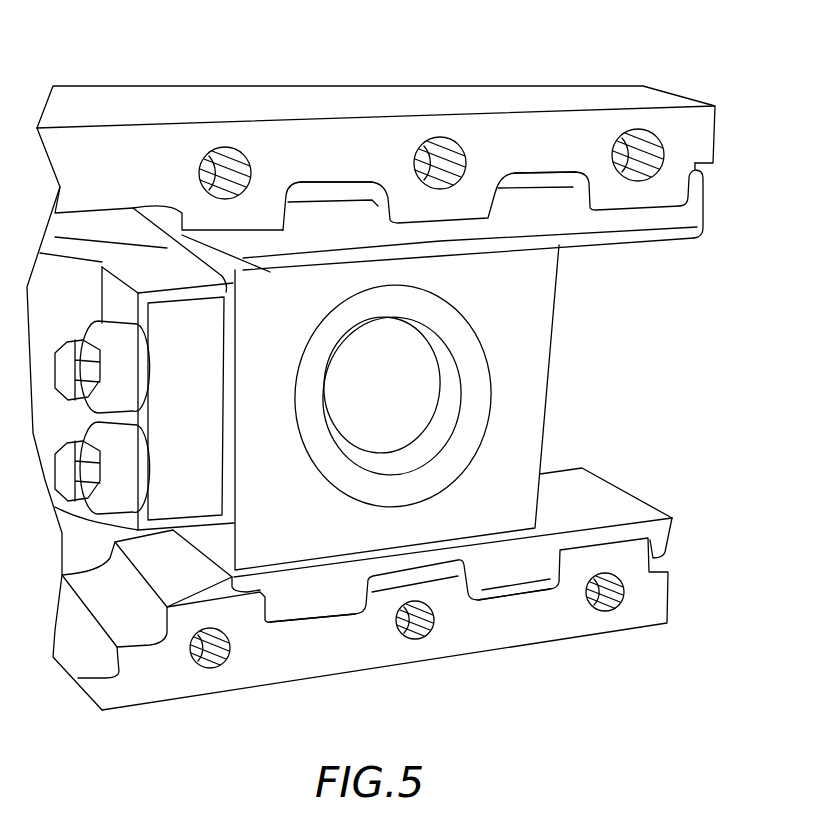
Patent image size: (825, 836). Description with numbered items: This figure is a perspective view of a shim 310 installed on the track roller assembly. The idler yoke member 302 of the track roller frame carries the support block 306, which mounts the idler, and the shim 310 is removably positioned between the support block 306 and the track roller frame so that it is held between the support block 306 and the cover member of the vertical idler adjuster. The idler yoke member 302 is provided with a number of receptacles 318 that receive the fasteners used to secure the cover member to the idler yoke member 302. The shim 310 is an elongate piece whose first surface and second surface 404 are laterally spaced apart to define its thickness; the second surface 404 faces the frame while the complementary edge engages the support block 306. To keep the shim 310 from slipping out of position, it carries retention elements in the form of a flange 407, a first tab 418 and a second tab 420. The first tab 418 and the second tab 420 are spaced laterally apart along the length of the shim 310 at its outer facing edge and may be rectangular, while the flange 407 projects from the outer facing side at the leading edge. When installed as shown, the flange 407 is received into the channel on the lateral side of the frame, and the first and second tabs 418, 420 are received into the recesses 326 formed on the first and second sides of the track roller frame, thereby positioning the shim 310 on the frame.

The idler yoke member 302 is at (597, 97).
The second surface 404 is at (625, 507).
The support block 306 is at (550, 397).
The shim 310 is at (716, 250).
The receptacle 318 is at (635, 153).
The recess 326 is at (385, 190).
The flange 407 is at (700, 176).
The first tab 418 is at (543, 208).
The second tab 420 is at (312, 217).